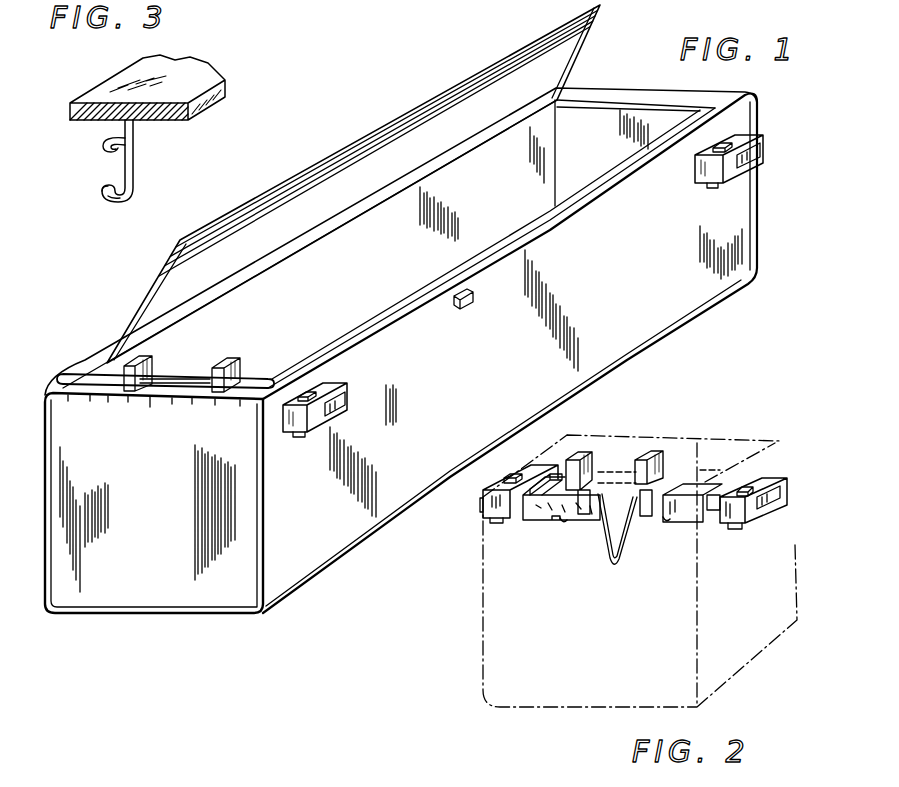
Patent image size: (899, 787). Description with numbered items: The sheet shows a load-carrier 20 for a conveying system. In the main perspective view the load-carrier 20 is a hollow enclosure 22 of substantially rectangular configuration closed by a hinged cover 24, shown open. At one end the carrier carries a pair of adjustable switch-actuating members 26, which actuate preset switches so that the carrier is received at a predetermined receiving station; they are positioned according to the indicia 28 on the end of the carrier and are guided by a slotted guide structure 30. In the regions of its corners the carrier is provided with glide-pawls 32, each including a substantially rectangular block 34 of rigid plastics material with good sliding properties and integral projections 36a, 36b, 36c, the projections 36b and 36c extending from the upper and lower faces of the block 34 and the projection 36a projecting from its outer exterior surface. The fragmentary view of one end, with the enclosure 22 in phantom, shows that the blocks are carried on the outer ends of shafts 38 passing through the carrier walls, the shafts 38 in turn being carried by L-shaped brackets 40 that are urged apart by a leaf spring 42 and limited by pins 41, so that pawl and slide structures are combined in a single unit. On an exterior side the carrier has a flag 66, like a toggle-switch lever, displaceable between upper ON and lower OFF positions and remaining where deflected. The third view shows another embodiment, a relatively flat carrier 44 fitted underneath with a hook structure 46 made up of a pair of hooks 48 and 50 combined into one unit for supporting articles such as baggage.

In FIG. 1, the load-carrier 20 is at (410, 95).
In FIG. 1, the hollow enclosure 22 is at (455, 436).
In FIG. 2, the hollow enclosure 22 is at (763, 650).
In FIG. 1, the hinged cover 24 is at (383, 138).
In FIG. 1, the adjustable switch-actuating members 26 is at (230, 356).
In FIG. 2, the adjustable switch-actuating members 26 is at (642, 456).
In FIG. 1, the indicia 28 is at (156, 417).
In FIG. 1, the slotted guide structure 30 is at (252, 381).
In FIG. 2, the slotted guide structure 30 is at (698, 452).
In FIG. 1, the glide-pawls 32 is at (276, 431).
In FIG. 2, the glide-pawls 32 is at (718, 552).
In FIG. 1, the block 34 is at (347, 392).
In FIG. 2, the block 34 is at (780, 443).
In FIG. 1, the projection 36a is at (326, 413).
In FIG. 2, the projection 36a is at (773, 512).
In FIG. 1, the projection 36b is at (312, 392).
In FIG. 2, the projection 36b is at (757, 477).
In FIG. 1, the projection 36c is at (300, 437).
In FIG. 2, the projection 36c is at (735, 528).
In FIG. 2, the shafts 38 is at (533, 527).
In FIG. 2, the L-shaped brackets 40 is at (692, 519).
In FIG. 2, the pins 41 is at (565, 521).
In FIG. 2, the leaf spring 42 is at (616, 564).
In FIG. 3, the carrier 44 is at (164, 128).
In FIG. 3, the hook structure 46 is at (88, 144).
In FIG. 3, the hook 48 is at (107, 153).
In FIG. 3, the hook 50 is at (103, 198).
In FIG. 1, the flag 66 is at (462, 292).